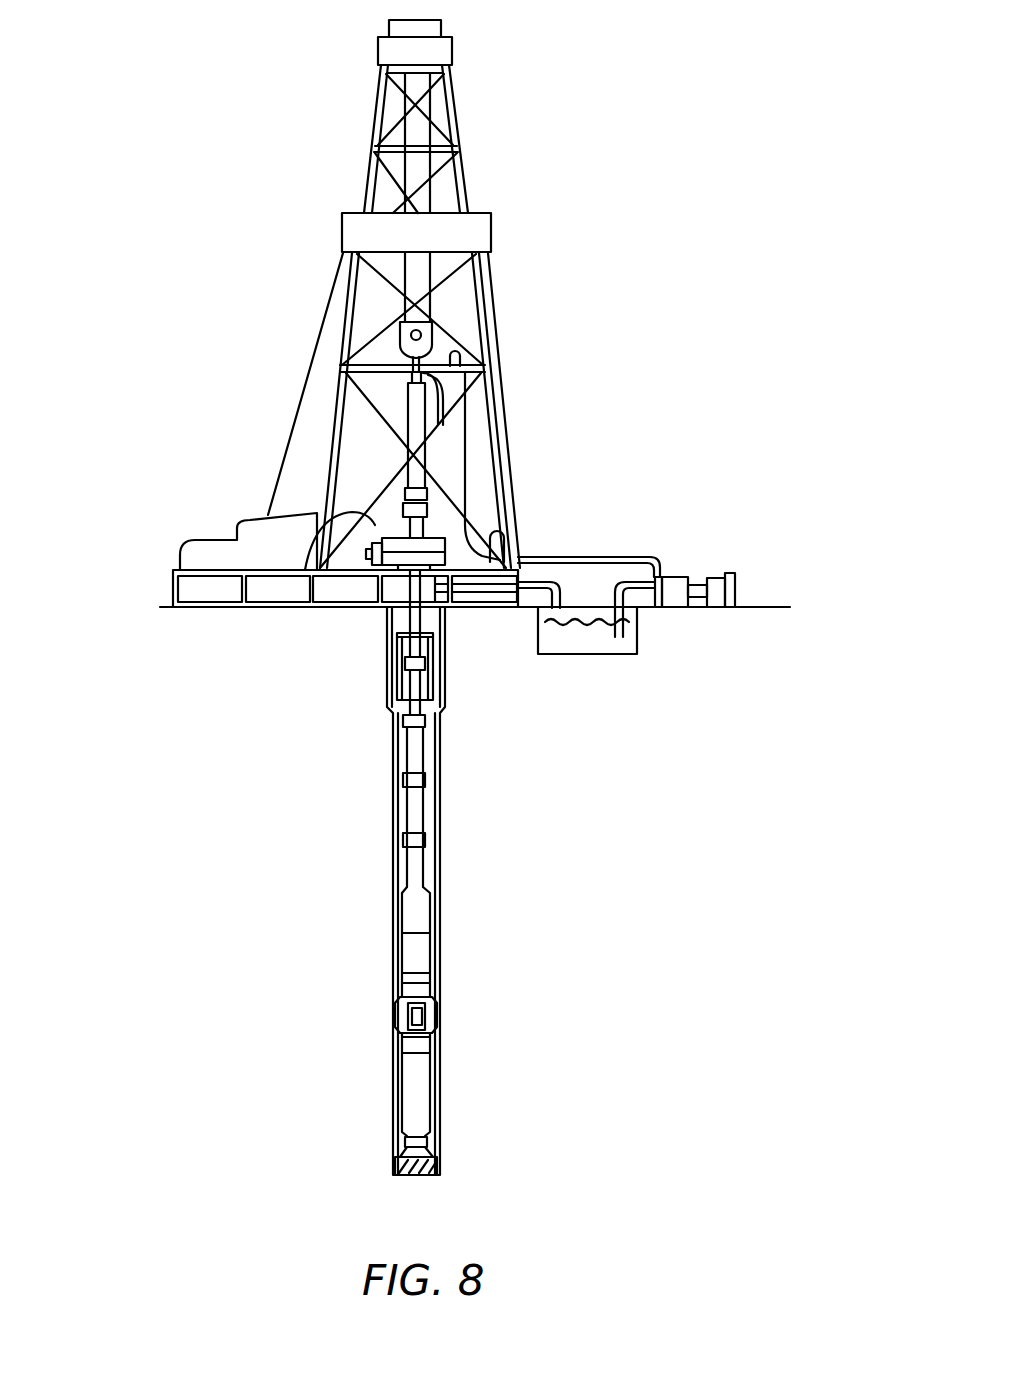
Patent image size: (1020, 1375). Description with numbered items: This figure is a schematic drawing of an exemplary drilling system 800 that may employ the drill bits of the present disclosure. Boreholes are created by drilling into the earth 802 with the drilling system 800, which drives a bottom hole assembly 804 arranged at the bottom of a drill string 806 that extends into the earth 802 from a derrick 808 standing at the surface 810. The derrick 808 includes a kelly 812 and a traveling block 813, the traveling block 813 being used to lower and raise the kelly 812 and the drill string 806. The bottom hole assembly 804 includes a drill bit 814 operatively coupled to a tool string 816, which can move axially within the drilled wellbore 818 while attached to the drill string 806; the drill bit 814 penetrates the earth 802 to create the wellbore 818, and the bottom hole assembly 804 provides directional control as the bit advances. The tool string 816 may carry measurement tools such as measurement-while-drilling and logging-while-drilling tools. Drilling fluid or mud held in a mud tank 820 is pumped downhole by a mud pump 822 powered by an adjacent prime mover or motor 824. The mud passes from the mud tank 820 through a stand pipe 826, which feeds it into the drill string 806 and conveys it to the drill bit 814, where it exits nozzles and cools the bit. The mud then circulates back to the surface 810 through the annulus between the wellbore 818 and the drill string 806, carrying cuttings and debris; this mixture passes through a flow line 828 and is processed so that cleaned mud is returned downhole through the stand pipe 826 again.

The drilling system 800 is at (630, 221).
The earth 802 is at (475, 647).
The bottom hole assembly 804 is at (312, 1010).
The drill string 806 is at (415, 798).
The derrick 808 is at (345, 342).
The surface 810 is at (173, 598).
The kelly 812 is at (412, 410).
The traveling block 813 is at (432, 335).
The drill bit 814 is at (437, 1163).
The tool string 816 is at (417, 1077).
The wellbore 818 is at (393, 748).
The mud tank 820 is at (577, 655).
The mud pump 822 is at (668, 587).
The motor 824 is at (715, 597).
The stand pipe 826 is at (467, 457).
The flow line 828 is at (558, 593).